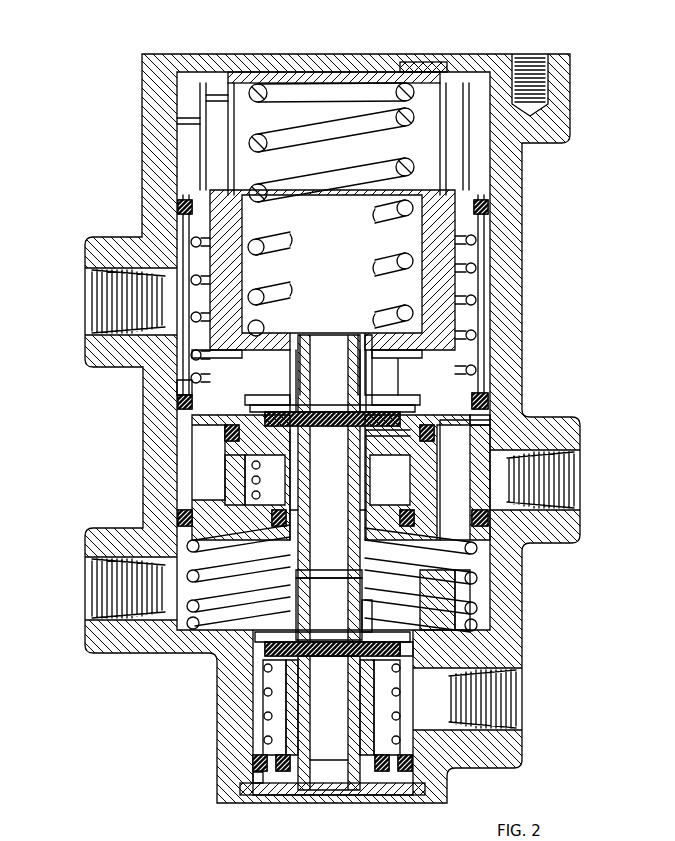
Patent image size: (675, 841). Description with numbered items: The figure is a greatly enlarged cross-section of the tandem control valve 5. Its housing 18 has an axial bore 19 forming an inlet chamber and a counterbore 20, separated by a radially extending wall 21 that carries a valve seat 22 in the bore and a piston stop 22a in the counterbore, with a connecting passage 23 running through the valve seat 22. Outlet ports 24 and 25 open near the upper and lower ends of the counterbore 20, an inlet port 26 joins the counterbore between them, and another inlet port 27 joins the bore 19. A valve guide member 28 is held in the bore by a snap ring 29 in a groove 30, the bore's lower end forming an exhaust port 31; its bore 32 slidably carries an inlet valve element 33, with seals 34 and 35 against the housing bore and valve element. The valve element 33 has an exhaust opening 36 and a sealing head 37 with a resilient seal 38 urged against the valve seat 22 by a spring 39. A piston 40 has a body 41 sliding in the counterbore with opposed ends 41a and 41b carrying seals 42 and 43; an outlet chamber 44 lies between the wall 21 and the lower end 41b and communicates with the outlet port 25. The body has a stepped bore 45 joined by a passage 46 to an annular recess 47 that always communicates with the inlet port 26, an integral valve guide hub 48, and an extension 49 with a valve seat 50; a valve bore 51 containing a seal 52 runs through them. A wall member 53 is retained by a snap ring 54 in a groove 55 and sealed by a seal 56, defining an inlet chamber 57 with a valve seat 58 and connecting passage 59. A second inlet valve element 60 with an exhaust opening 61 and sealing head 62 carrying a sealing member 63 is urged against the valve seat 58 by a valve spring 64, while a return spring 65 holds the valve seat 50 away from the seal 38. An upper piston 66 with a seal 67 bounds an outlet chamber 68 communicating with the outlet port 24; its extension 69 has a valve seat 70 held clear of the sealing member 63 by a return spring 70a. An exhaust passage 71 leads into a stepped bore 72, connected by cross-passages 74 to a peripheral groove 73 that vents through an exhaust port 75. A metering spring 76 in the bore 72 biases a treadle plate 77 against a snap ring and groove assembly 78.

The tandem control valve 5 is at (576, 196).
The housing 18 is at (570, 84).
The axial bore 19 is at (253, 695).
The counterbore 20 is at (488, 272).
The radially extending wall 21 is at (255, 636).
The valve seat 22 is at (282, 642).
The piston stop 22a is at (460, 574).
The connecting passage 23 is at (368, 605).
The outlet port 24 is at (92, 324).
The outlet port 25 is at (92, 609).
The inlet port 26 is at (572, 502).
The inlet port 27 is at (510, 726).
The valve guide member 28 is at (382, 772).
The snap ring 29 is at (258, 783).
The groove 30 is at (240, 789).
The exhaust port 31 is at (405, 790).
The bore 32 is at (362, 724).
The inlet valve element 33 is at (362, 754).
The seal 34 is at (253, 762).
The seal 35 is at (282, 772).
The exhaust opening 36 is at (362, 695).
The sealing head 37 is at (413, 648).
The resilient seal 38 is at (329, 665).
The spring 39 is at (264, 722).
The piston 40 is at (132, 443).
The piston body 41 is at (176, 398).
The upper piston body end 41a is at (488, 372).
The lower piston body end 41b is at (488, 532).
The seal 42 is at (177, 388).
The seal 43 is at (176, 516).
The outlet chamber 44 is at (472, 606).
The stepped bore 45 is at (250, 487).
The passage 46 is at (444, 500).
The annular recess 47 is at (486, 420).
The valve guide hub 48 is at (366, 464).
The extension 49 is at (288, 560).
The valve seat 50 is at (329, 609).
The valve bore 51 is at (329, 583).
The seal 52 is at (272, 521).
The wall member 53 is at (398, 395).
The snap ring 54 is at (420, 395).
The groove 55 is at (196, 363).
The seal 56 is at (225, 432).
The inlet chamber 57 is at (236, 466).
The valve seat 58 is at (262, 400).
The connecting passage 59 is at (345, 412).
The inlet valve element 60 is at (339, 500).
The exhaust opening 61 is at (366, 521).
The sealing head 62 is at (428, 441).
The sealing member 63 is at (366, 434).
The valve spring 64 is at (410, 526).
The return spring 65 is at (470, 588).
The piston 66 is at (339, 230).
The seal 67 is at (176, 208).
The outlet chamber 68 is at (488, 248).
The extension 69 is at (368, 380).
The valve seat 70 is at (308, 410).
The return spring 70a is at (488, 300).
The exhaust passage 71 is at (304, 340).
The stepped bore 72 is at (242, 269).
The peripheral groove 73 is at (200, 130).
The cross-passages 74 is at (210, 150).
The exhaust port 75 is at (177, 118).
The metering spring 76 is at (390, 132).
The treadle plate 77 is at (340, 72).
The snap ring and groove assembly 78 is at (428, 62).